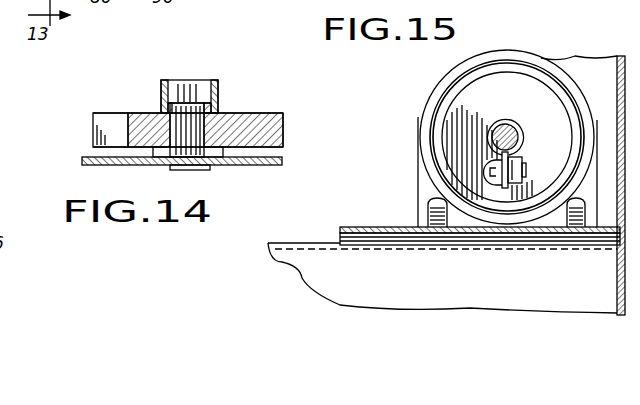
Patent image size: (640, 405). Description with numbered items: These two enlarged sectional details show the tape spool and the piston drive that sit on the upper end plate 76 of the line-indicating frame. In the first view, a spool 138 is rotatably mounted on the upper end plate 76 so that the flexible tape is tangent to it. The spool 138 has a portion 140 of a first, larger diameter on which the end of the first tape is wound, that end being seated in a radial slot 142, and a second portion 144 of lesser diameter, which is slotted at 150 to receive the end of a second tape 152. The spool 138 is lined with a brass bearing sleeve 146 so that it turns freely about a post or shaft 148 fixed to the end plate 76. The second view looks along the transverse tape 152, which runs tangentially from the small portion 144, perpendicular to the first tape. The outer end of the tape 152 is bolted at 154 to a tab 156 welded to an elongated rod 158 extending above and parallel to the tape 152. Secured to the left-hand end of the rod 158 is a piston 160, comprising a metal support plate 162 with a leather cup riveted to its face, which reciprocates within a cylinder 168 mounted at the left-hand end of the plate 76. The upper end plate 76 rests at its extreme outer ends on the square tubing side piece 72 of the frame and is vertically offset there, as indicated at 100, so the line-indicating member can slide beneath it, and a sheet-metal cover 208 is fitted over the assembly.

In FIG. 14, the spool 138 is at (284, 130).
In FIG. 14, the portion of a first diameter 140 is at (276, 113).
In FIG. 14, the radial slot 142 is at (104, 120).
In FIG. 14, the second portion of lesser diameter 144 is at (221, 112).
In FIG. 14, the bearing sleeve 146 is at (148, 117).
In FIG. 14, the post or shaft 148 is at (182, 115).
In FIG. 14, the slot 150 is at (218, 86).
In FIG. 14, the upper end plate 76 is at (260, 166).
In FIG. 15, the upper end plate 76 is at (357, 226).
In FIG. 15, the tape 152 is at (530, 147).
In FIG. 15, the bolt 154 is at (492, 164).
In FIG. 15, the tab 156 is at (500, 187).
In FIG. 15, the elongated rod 158 is at (500, 128).
In FIG. 15, the piston 160 is at (553, 78).
In FIG. 15, the metal support plate 162 is at (540, 185).
In FIG. 15, the cylinder 168 is at (448, 80).
In FIG. 15, the vertically offset end 100 is at (398, 240).
In FIG. 15, the side piece 72 is at (300, 262).
In FIG. 15, the sheet-metal cover 208 is at (617, 290).